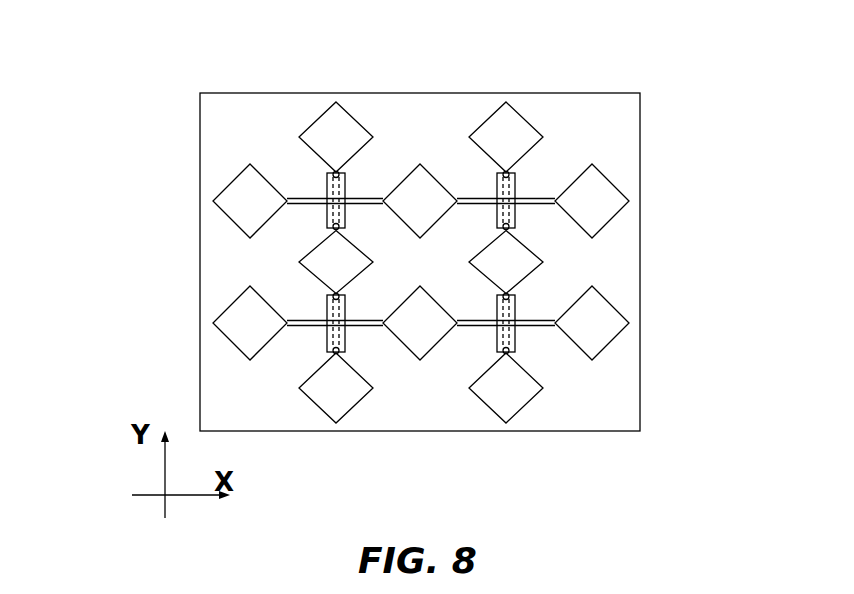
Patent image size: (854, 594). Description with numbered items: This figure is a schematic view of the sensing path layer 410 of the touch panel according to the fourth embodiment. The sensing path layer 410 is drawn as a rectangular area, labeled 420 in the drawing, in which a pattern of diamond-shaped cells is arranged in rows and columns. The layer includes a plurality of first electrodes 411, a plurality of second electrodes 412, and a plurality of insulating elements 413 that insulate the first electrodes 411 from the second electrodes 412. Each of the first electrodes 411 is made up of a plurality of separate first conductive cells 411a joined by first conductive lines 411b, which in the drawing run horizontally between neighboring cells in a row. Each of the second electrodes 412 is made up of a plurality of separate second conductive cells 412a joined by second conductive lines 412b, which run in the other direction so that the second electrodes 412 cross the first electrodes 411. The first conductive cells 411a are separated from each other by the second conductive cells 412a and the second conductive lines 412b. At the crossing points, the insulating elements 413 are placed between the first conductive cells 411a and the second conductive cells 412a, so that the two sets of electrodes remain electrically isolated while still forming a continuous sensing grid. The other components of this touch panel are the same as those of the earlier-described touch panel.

The sensing path layer 410 is at (427, 228).
The first electrodes 411 is at (488, 200).
The first conductive cells 411a is at (602, 213).
The first conductive lines 411b is at (528, 205).
The second electrodes 412 is at (538, 104).
The second conductive cells 412a is at (502, 132).
The second conductive lines 412b is at (497, 172).
The insulating elements 413 is at (518, 178).
The substrate 420 is at (610, 388).